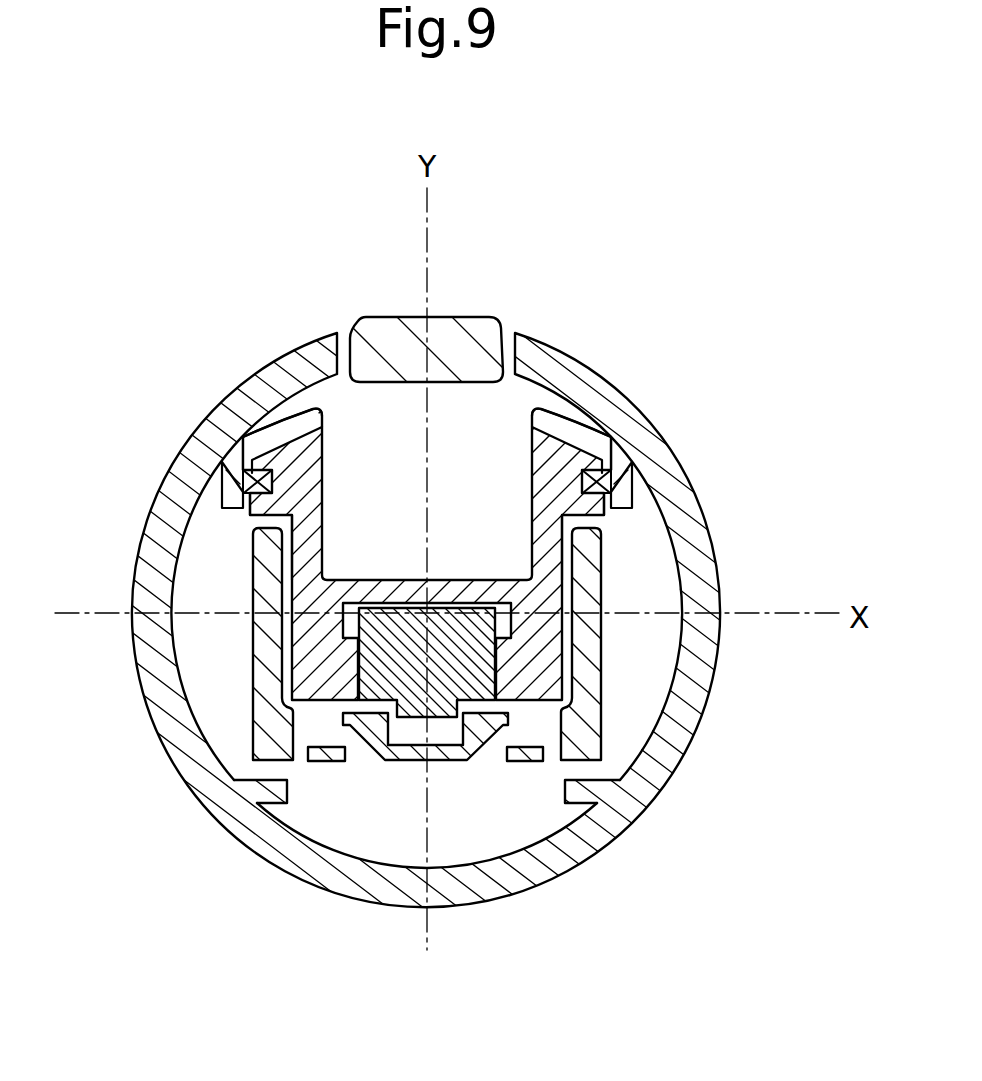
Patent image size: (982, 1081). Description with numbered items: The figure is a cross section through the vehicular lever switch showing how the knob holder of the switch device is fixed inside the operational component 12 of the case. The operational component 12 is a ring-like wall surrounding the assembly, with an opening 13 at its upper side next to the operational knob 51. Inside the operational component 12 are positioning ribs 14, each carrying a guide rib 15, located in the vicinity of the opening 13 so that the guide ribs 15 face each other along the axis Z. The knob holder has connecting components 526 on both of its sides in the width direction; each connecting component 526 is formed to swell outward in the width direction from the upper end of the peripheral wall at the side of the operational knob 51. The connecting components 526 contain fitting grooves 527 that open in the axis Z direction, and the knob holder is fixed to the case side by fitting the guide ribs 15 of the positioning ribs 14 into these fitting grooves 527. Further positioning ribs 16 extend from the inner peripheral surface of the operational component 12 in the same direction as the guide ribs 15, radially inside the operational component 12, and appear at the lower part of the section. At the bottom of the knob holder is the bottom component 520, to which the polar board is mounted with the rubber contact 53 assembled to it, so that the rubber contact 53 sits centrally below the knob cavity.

The operational component 12 is at (630, 434).
The opening 13 is at (500, 325).
The positioning rib 14 is at (219, 486).
The guide rib 15 is at (265, 458).
The positioning rib 16 is at (272, 794).
The operational knob 51 is at (455, 347).
The rubber contact 53 is at (457, 667).
The bottom component 520 is at (385, 590).
The connecting component 526 is at (293, 447).
The fitting groove 527 is at (273, 476).